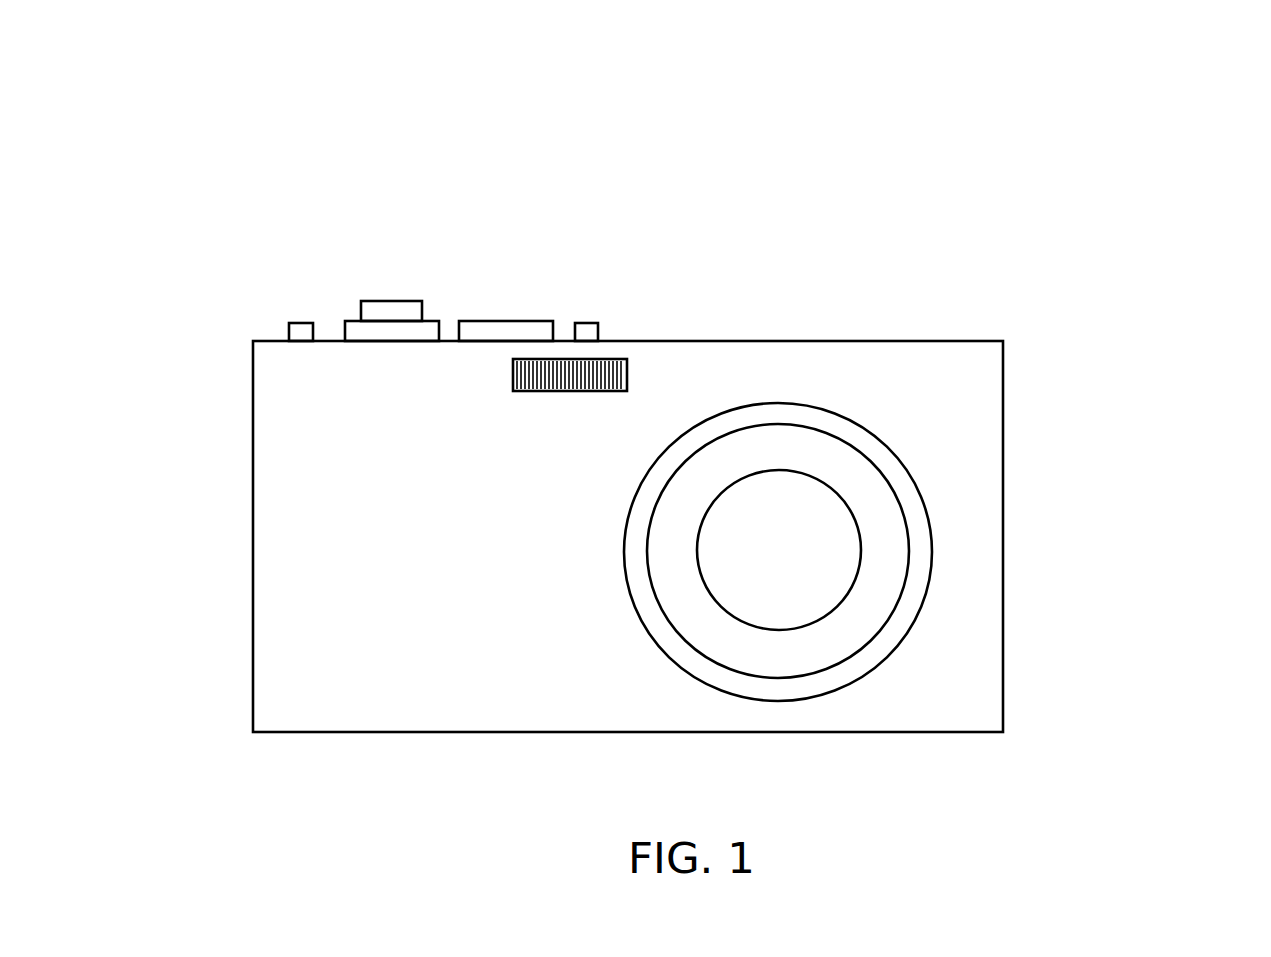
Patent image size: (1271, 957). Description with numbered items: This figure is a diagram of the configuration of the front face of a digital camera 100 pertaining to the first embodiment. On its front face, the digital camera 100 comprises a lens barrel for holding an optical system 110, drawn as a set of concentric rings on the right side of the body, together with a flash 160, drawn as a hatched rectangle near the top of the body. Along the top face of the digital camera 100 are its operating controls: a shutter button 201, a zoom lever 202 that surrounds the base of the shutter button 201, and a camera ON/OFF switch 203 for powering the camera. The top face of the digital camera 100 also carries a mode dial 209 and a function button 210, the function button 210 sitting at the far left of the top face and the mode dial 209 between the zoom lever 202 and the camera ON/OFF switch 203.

The digital camera 100 is at (268, 150).
The function button 210 is at (300, 330).
The shutter button 201 is at (383, 312).
The zoom lever 202 is at (428, 330).
The mode dial 209 is at (515, 322).
The camera ON/OFF switch 203 is at (587, 332).
The flash 160 is at (578, 378).
The optical system 110 is at (820, 568).